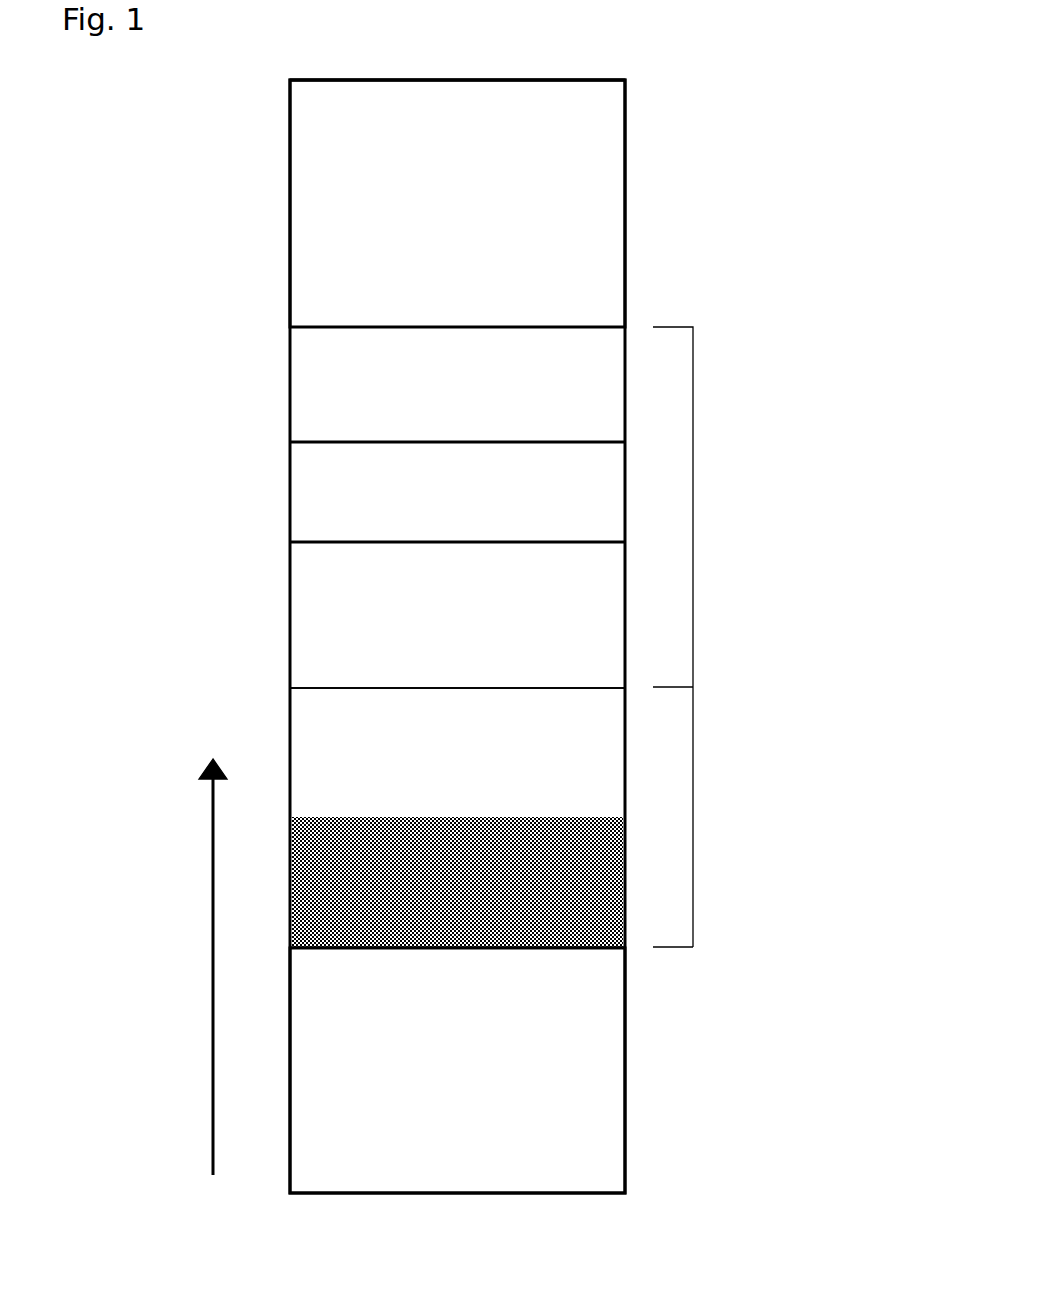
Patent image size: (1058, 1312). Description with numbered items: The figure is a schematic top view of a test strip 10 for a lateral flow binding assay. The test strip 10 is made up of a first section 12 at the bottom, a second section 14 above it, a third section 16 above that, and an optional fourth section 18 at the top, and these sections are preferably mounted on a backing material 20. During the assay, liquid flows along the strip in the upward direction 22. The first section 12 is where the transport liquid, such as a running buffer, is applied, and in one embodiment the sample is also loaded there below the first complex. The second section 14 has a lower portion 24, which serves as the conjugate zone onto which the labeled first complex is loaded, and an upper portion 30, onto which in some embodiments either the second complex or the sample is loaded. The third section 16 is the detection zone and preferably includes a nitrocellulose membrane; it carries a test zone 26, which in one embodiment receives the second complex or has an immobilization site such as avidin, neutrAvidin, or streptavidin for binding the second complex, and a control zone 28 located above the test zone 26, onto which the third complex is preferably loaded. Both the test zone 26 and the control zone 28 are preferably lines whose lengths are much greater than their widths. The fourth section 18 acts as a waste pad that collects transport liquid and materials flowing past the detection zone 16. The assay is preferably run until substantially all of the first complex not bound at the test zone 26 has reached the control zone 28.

The test strip 10 is at (183, 197).
The first section 12 is at (585, 1097).
The second section 14 is at (693, 826).
The third section 16 is at (693, 502).
The fourth section 18 is at (592, 211).
The backing material 20 is at (572, 80).
The upward direction 22 is at (195, 967).
The lower portion of the second section 24 is at (535, 913).
The test zone 26 is at (342, 542).
The control zone 28 is at (334, 441).
The upper portion of the second section 30 is at (326, 739).